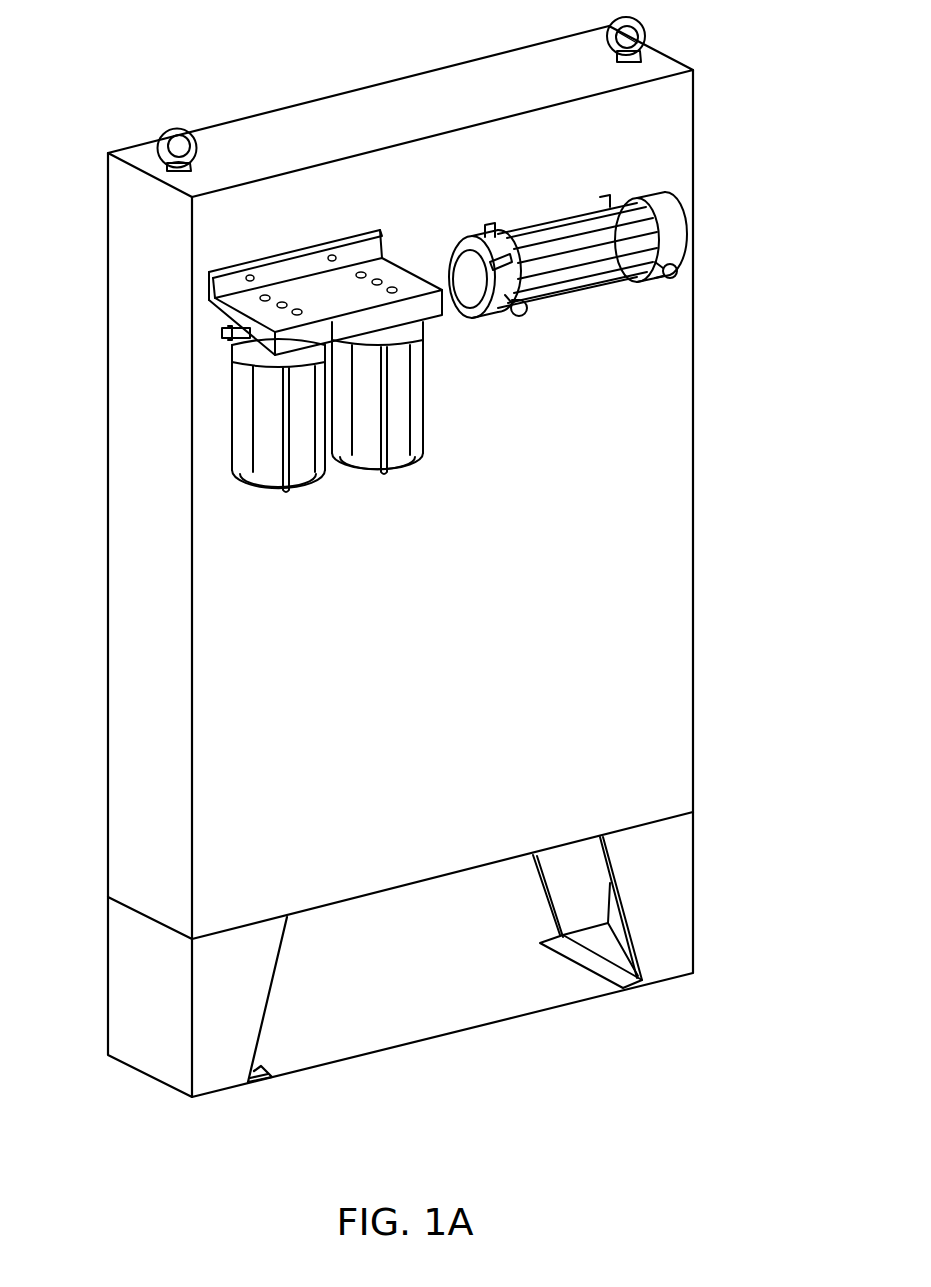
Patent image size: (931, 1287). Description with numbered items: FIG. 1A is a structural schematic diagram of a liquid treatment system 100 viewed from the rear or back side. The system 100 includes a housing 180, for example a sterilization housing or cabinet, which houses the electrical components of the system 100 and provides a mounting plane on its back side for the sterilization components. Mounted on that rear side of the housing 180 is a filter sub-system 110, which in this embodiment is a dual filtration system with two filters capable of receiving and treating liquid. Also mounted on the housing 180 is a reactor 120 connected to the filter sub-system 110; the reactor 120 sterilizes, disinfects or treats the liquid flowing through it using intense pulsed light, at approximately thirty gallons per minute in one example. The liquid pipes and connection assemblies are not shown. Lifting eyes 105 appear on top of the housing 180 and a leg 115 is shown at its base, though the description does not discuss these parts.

The liquid treatment system 100 is at (278, 52).
The lifting eye bolt 105 is at (177, 128).
The filter sub-system 110 is at (227, 413).
The leg / foot bracket 115 is at (583, 968).
The reactor 120 is at (615, 303).
The housing 180 is at (695, 113).